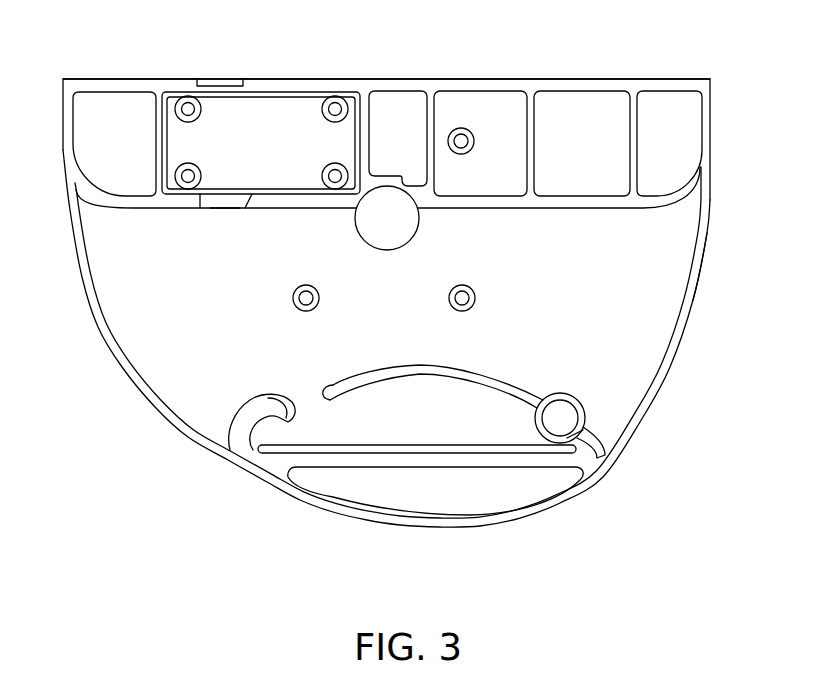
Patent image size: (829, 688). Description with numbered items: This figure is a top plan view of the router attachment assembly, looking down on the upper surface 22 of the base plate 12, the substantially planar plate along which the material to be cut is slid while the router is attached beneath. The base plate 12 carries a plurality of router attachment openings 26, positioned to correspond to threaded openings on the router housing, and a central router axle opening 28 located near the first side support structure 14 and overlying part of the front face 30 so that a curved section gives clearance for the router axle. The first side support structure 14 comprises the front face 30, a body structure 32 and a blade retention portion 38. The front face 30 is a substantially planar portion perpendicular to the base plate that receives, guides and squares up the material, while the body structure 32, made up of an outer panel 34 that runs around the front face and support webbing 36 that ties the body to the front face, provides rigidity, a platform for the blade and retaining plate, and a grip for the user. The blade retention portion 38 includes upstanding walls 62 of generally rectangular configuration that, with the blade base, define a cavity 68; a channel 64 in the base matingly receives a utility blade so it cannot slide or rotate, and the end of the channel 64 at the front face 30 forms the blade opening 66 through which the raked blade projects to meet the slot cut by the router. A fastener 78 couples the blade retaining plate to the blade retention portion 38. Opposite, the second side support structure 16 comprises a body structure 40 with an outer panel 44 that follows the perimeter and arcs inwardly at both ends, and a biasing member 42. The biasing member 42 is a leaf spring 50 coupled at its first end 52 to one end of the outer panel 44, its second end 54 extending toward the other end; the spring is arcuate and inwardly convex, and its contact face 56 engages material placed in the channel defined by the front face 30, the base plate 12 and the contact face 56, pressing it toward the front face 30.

The base plate 12 is at (712, 197).
The first side support structure 14 is at (668, 57).
The second side support structure 16 is at (265, 516).
The upper surface 22 is at (665, 280).
The router attachment openings 26 is at (460, 128).
The central router axle opening 28 is at (416, 232).
The front face 30 is at (273, 209).
The body structure 32 is at (195, 66).
The outer panel 34 is at (613, 85).
The support webbing 36 is at (639, 130).
The blade retention portion 38 is at (151, 137).
The body structure 40 is at (540, 530).
The biasing member 42 is at (537, 365).
The outer panel 44 is at (481, 546).
The leaf spring 50 is at (469, 371).
The first end 52 is at (577, 400).
The second end 54 is at (322, 386).
The contact face 56 is at (376, 369).
The upstanding walls 62 is at (368, 97).
The channel 64 is at (213, 197).
The blade opening 66 is at (223, 224).
The cavity 68 is at (278, 103).
The fastener 78 is at (334, 96).